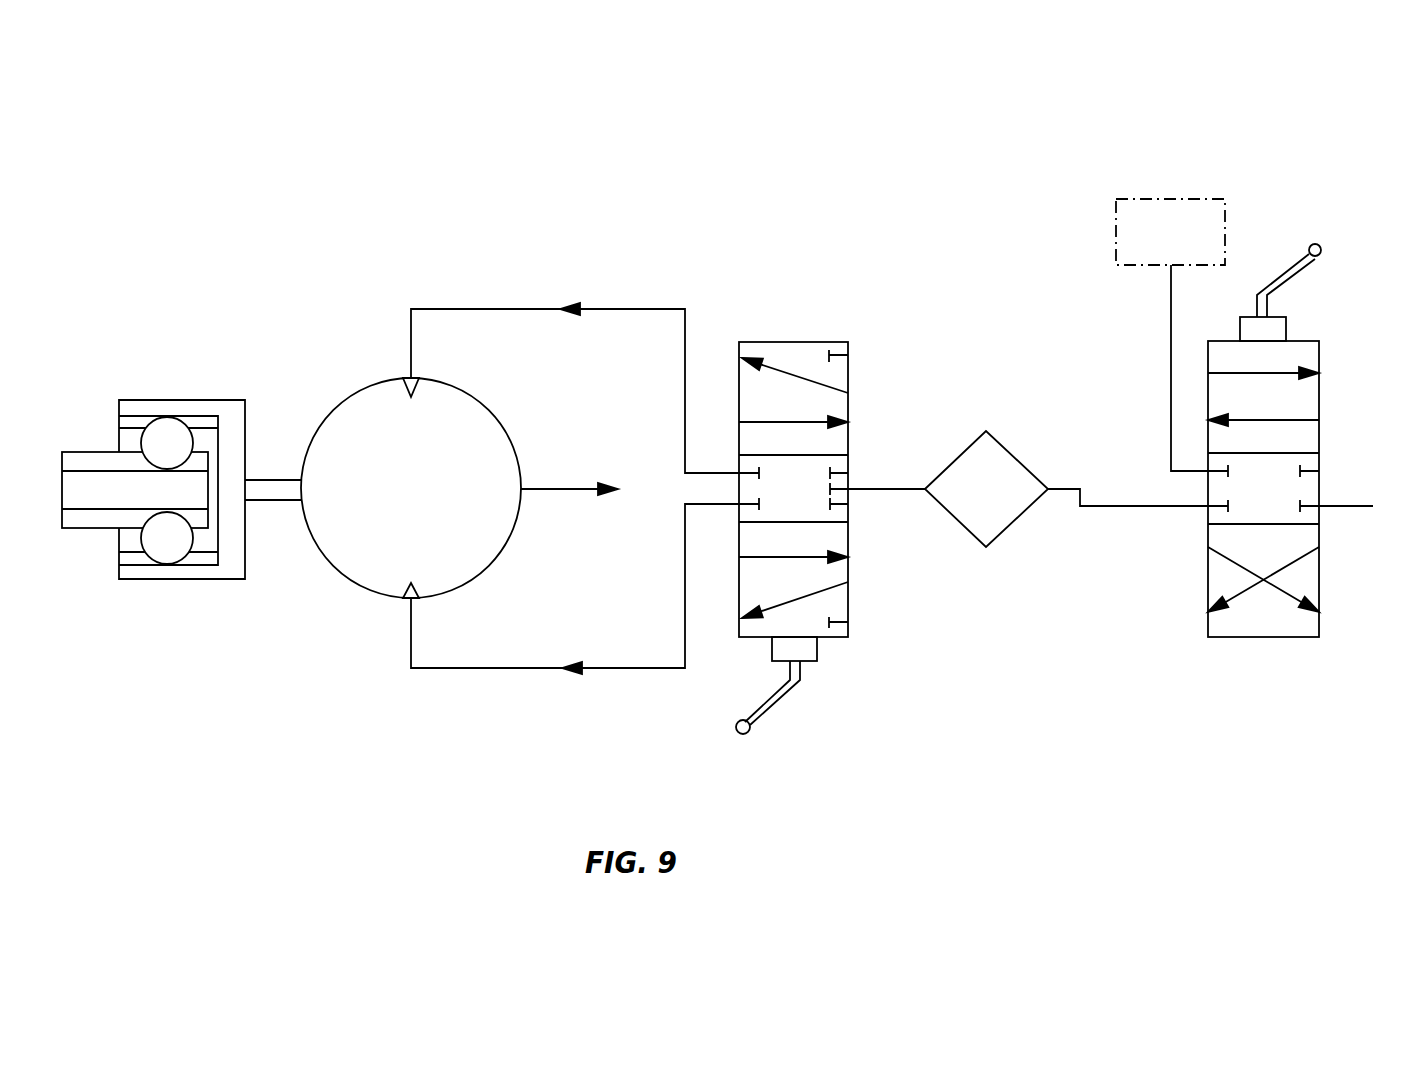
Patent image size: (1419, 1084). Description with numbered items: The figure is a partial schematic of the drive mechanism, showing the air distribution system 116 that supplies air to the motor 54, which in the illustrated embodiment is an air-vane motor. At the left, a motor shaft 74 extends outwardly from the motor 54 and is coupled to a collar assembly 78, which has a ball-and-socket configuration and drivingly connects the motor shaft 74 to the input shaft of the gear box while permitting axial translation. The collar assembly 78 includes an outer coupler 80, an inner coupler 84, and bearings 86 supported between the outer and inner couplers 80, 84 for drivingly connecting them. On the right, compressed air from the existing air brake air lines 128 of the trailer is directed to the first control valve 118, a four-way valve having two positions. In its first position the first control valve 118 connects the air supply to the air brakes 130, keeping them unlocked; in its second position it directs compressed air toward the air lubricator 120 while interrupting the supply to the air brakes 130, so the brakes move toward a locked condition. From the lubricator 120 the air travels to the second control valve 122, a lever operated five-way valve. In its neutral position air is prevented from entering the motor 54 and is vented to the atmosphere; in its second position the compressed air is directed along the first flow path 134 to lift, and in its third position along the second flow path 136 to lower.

The motor 54 is at (325, 560).
The motor shaft 74 is at (268, 478).
The collar assembly 78 is at (166, 612).
The outer coupler 80 is at (213, 400).
The inner coupler 84 is at (90, 450).
The bearings 86 is at (158, 430).
The air distribution system 116 is at (1016, 178).
The first control valve 118 is at (1208, 563).
The air lubricator 120 is at (1018, 517).
The second control valve 122 is at (851, 600).
The air brake air lines 128 is at (1338, 502).
The air brakes 130 is at (1150, 197).
The first flow path 134 is at (635, 309).
The second flow path 136 is at (473, 668).